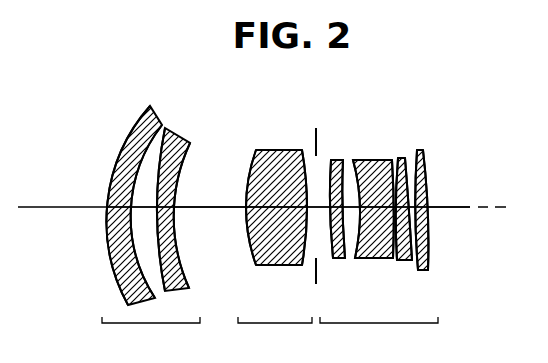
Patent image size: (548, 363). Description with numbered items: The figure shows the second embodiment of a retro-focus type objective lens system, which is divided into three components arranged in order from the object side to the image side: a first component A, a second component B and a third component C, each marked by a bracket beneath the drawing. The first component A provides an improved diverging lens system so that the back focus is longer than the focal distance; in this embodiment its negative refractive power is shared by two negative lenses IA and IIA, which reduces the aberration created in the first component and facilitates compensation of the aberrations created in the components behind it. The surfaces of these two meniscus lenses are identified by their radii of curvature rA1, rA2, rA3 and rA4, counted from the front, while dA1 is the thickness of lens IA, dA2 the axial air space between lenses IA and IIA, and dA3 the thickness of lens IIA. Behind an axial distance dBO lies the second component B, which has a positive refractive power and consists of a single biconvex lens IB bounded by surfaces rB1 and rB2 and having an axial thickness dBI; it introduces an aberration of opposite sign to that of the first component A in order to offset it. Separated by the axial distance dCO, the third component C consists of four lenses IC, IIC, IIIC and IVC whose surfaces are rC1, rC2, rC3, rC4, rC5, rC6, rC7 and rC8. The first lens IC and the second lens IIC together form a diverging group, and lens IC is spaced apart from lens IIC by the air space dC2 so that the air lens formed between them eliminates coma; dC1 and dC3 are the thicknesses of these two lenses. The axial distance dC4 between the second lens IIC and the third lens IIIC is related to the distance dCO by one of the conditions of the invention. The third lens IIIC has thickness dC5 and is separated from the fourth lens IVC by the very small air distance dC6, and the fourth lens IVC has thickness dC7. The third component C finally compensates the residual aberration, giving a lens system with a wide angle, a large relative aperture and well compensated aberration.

The first component A is at (151, 332).
The second component B is at (275, 332).
The third component C is at (379, 332).
The negative lens IA is at (130, 276).
The negative lens IIA is at (187, 279).
The lens element of group B IB is at (272, 267).
The first lens IC is at (340, 262).
The second lens IIC is at (377, 260).
The third lens IIIC is at (402, 262).
The fourth lens element of group C IVC is at (428, 271).
The radius of curvature rA1 is at (122, 148).
The radius of curvature rA2 is at (163, 126).
The radius of curvature rA3 is at (168, 125).
The radius of curvature rA4 is at (187, 147).
The radius of curvature rB1 is at (253, 172).
The radius of curvature rB2 is at (304, 160).
The radius of curvature rC1 is at (334, 161).
The radius of curvature rC2 is at (342, 160).
The radius of curvature rC3 is at (374, 209).
The radius of curvature rC4 is at (389, 158).
The radius of curvature rC5 is at (400, 158).
The radius of curvature rC6 is at (410, 160).
The radius of curvature rC7 is at (421, 160).
The radius of curvature rC8 is at (425, 175).
The lens thickness dA1 is at (110, 225).
The axial distance dA2 is at (120, 207).
The lens thickness dA3 is at (167, 217).
The axial distance dBO is at (210, 198).
The lens thickness dBI is at (276, 196).
The axial distance dCO is at (294, 221).
The lens thickness dC1 is at (348, 178).
The axial distance dC2 is at (335, 255).
The lens thickness dC3 is at (378, 235).
The axial distance dC4 is at (414, 206).
The lens thickness dC5 is at (420, 258).
The axial distance dC6 is at (418, 238).
The lens thickness dC7 is at (417, 210).